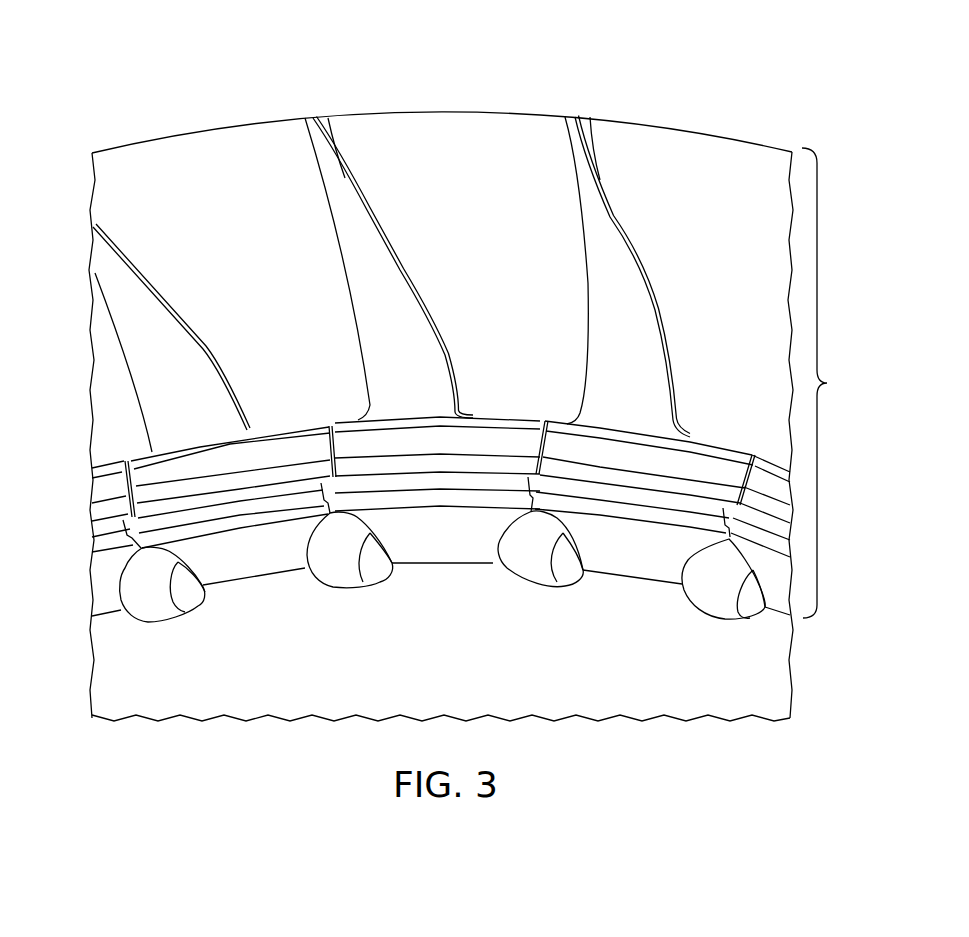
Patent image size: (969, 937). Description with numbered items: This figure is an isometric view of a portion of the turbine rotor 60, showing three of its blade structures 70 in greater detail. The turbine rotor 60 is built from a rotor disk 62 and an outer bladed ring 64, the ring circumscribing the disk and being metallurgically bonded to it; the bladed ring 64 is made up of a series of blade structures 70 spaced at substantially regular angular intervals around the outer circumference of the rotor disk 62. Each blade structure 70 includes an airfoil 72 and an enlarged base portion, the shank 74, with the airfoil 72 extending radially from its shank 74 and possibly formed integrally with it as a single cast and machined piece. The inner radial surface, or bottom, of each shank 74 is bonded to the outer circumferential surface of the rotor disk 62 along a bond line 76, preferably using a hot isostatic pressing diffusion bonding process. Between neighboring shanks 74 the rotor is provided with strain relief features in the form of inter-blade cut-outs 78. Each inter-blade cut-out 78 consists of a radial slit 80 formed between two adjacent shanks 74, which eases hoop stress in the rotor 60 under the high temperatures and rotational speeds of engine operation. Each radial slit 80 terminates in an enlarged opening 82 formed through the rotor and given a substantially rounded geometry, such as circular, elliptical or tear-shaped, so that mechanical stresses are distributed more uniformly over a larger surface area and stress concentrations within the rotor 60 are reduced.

The turbine rotor 60 is at (58, 258).
The rotor disk 62 is at (188, 725).
The outer bladed ring 64 is at (834, 383).
The blade structure 70 is at (190, 126).
The airfoil 72 is at (236, 288).
The shank 74 is at (212, 467).
The bond line 76 is at (250, 583).
The inter-blade cut-out 78 is at (162, 618).
The radial slit 80 is at (122, 481).
The enlarged opening 82 is at (130, 593).